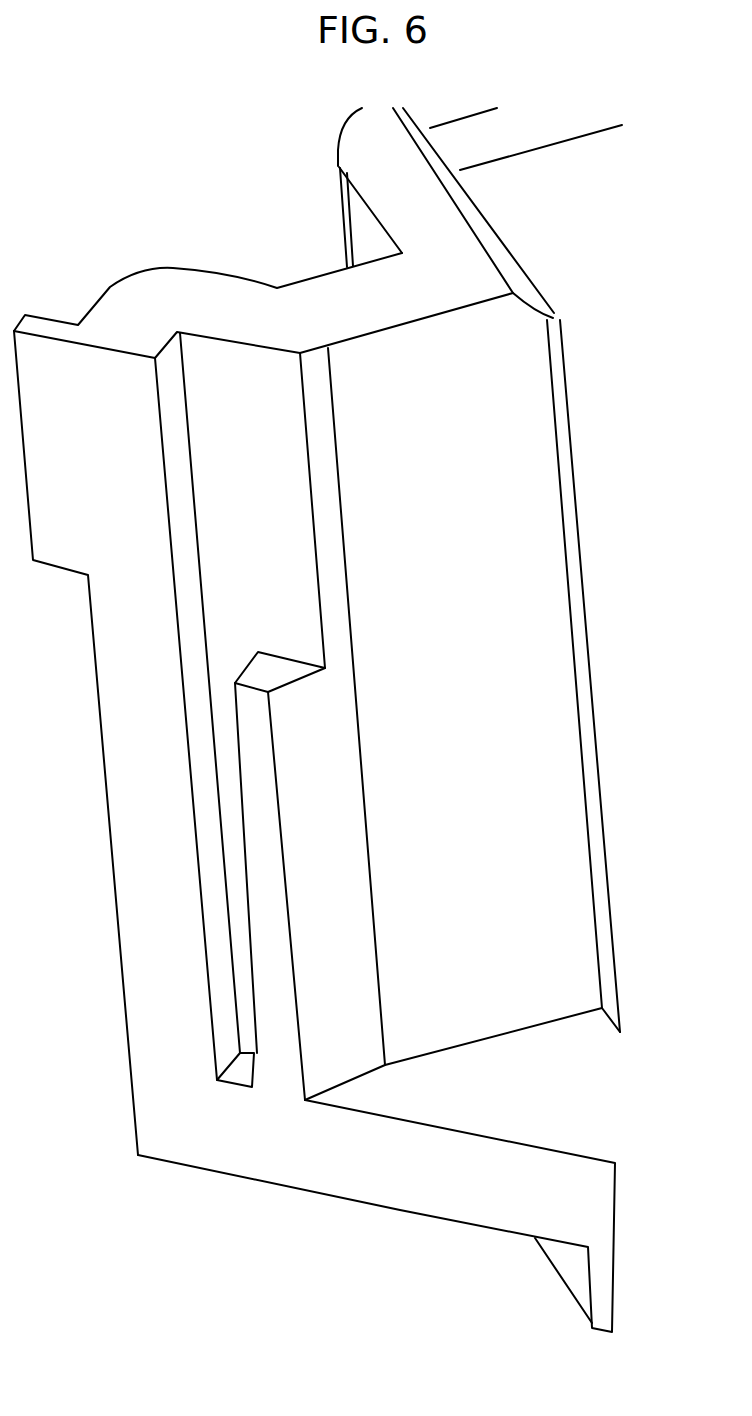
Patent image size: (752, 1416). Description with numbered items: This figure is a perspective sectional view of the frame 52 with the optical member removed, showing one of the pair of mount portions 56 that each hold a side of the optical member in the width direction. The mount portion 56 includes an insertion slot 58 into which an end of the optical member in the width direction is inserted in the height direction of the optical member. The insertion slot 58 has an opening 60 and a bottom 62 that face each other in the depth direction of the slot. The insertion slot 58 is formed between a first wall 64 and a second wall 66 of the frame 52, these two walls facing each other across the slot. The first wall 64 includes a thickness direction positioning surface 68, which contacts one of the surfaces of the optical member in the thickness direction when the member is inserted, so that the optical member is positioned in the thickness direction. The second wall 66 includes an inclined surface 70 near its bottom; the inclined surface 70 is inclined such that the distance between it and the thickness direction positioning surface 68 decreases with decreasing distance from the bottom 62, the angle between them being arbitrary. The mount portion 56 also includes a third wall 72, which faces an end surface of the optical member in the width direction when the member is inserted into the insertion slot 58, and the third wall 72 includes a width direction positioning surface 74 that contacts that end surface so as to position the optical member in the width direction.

The frame 52 is at (516, 1106).
The mount portion 56 is at (273, 560).
The insertion slot 58 is at (199, 739).
The opening 60 is at (244, 672).
The bottom 62 is at (243, 1073).
The first wall 64 is at (114, 864).
The second wall 66 is at (317, 803).
The thickness direction positioning surface 68 is at (220, 962).
The inclined surface 70 is at (260, 1037).
The third wall 72 is at (216, 364).
The width direction positioning surface 74 is at (216, 364).